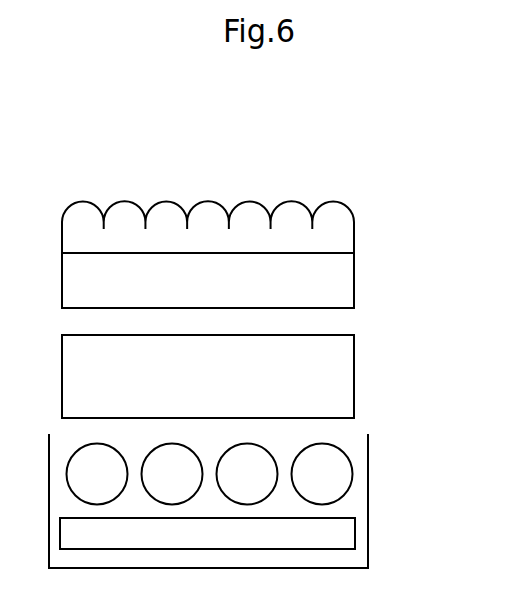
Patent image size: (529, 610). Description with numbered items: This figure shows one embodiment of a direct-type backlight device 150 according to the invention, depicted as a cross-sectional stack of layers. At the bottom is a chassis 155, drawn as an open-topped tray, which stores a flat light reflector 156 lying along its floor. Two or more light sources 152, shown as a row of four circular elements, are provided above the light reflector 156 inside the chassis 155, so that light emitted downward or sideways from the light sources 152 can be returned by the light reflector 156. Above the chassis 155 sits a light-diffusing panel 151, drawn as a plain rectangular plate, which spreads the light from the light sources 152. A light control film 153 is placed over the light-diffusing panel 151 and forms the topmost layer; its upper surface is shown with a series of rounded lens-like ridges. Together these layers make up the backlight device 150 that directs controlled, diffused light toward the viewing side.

The backlight device 150 is at (418, 197).
The light-diffusing panel 151 is at (354, 376).
The light sources 152 is at (350, 473).
The light control film 153 is at (375, 228).
The chassis 155 is at (368, 493).
The light reflector 156 is at (355, 532).